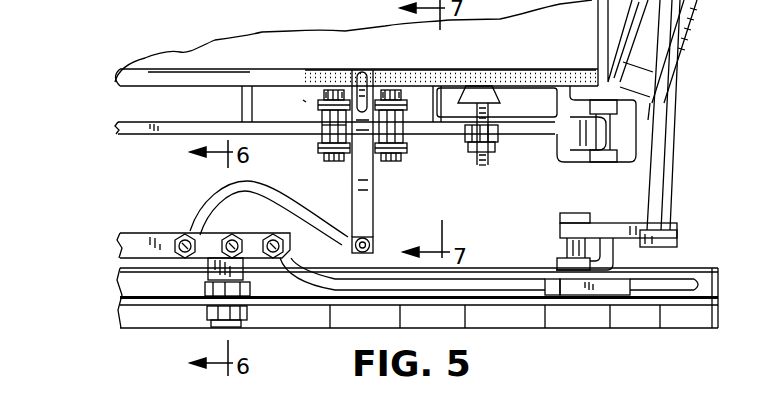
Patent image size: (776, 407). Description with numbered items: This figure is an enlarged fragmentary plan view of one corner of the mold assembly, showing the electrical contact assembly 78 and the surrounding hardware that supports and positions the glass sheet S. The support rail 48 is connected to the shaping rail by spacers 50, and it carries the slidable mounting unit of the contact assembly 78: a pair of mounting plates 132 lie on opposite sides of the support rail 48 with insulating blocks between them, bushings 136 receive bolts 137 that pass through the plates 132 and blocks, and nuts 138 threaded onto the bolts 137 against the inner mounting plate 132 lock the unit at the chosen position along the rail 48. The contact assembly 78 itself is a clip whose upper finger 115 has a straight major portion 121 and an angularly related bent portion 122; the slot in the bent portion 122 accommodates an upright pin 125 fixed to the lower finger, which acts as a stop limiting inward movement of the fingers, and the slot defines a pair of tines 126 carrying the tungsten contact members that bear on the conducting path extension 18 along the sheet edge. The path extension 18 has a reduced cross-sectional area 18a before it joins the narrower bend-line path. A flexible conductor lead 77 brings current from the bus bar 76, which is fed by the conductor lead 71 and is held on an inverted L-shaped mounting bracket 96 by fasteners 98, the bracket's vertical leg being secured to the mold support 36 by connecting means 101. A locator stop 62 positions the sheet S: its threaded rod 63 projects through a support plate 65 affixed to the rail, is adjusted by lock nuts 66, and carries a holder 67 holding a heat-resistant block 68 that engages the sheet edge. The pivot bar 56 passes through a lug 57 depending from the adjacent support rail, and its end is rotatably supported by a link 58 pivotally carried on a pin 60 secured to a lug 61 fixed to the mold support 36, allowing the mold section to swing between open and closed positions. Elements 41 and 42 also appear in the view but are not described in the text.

The glass sheet S is at (145, 58).
The path extension 18 is at (505, 72).
The reduced cross-sectional area of path extension 18a is at (582, 74).
The mold support 36 is at (118, 303).
The tube 41 is at (635, 165).
The bracket 42 is at (578, 147).
The support rail 48 is at (128, 128).
The spacer 50 is at (242, 98).
The pivot bar 56 is at (676, 113).
The lug 57 is at (693, 50).
The link 58 is at (628, 230).
The pin 60 is at (568, 247).
The lug 61 is at (612, 290).
The locator stop 62 is at (480, 180).
The threaded rod 63 is at (472, 160).
The support plate 65 is at (465, 137).
The lock nut 66 is at (497, 140).
The holder 67 is at (497, 112).
The block 68 is at (477, 88).
The conductor lead 71 is at (333, 292).
The bus bar 76 is at (133, 242).
The flexible conductor lead 77 is at (200, 215).
The contact assembly 78 is at (300, 98).
The mounting bracket 96 is at (192, 273).
The fastener 98 is at (220, 238).
The connecting means 101 is at (193, 320).
The upper finger 115 is at (385, 270).
The straight major portion 121 is at (374, 222).
The bent portion 122 is at (323, 128).
The upright pin 125 is at (366, 86).
The tine 126 is at (358, 68).
The mounting plate 132 is at (322, 110).
The bushing 136 is at (321, 137).
The bolt 137 is at (378, 160).
The nut 138 is at (330, 90).